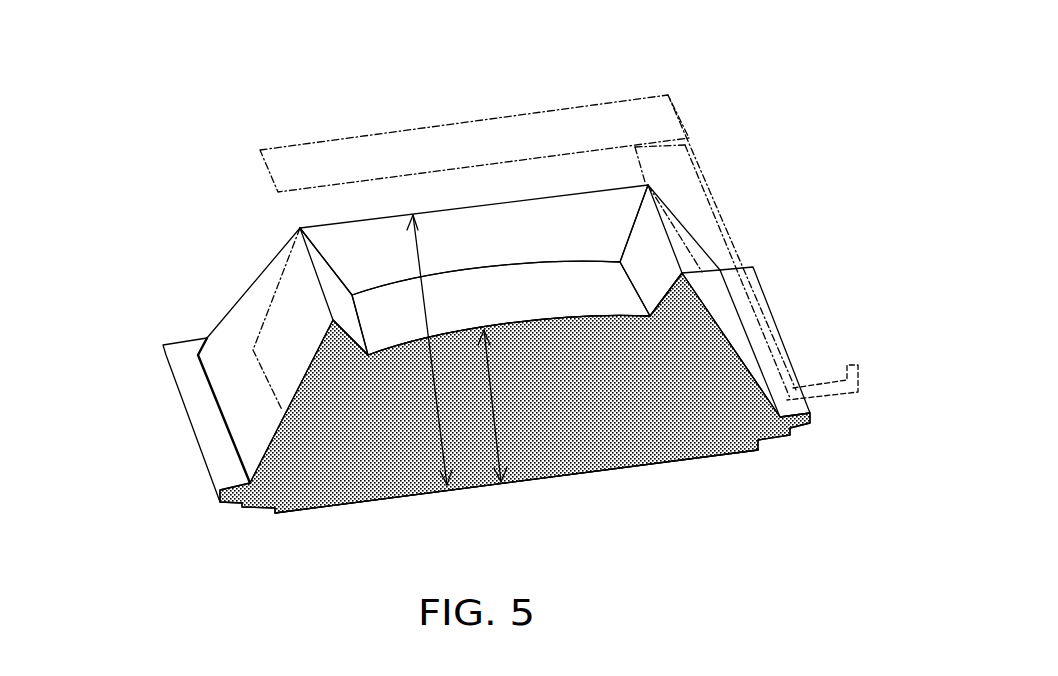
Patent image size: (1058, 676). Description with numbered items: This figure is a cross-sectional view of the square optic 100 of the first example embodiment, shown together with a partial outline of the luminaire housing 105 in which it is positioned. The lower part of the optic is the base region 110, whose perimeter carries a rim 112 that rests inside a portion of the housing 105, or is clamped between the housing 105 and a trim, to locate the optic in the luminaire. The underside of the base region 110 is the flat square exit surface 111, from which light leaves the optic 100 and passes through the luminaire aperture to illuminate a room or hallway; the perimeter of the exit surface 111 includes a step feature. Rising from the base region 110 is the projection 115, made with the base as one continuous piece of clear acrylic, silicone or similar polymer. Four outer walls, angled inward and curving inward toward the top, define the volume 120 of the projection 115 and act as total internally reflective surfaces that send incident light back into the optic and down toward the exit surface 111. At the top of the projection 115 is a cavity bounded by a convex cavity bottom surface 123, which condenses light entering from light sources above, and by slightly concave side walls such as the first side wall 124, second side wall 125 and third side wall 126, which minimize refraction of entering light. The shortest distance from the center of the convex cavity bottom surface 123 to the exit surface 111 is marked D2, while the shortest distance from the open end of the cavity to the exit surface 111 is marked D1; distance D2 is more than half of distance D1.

The square optic 100 is at (505, 364).
The housing 105 is at (703, 163).
The base region 110 is at (868, 338).
The exit surface 111 is at (673, 461).
The rim 112 is at (777, 327).
The projection 115 is at (180, 260).
The volume 120 is at (545, 372).
The convex cavity bottom surface 123 is at (525, 312).
The first side wall 124 is at (652, 258).
The second side wall 125 is at (514, 247).
The third side wall 126 is at (332, 290).
The distance D1 is at (429, 350).
The distance D2 is at (491, 406).